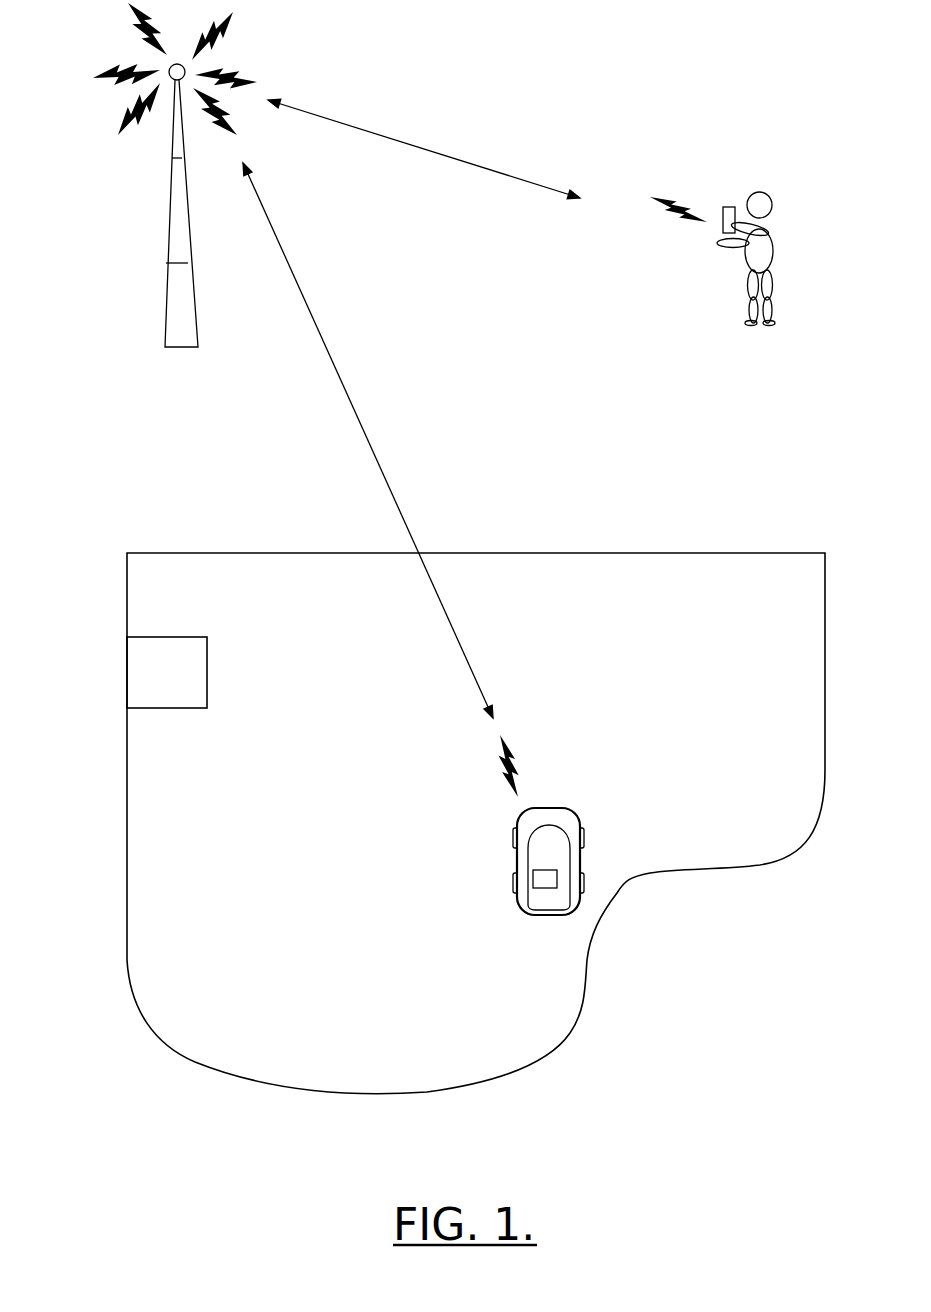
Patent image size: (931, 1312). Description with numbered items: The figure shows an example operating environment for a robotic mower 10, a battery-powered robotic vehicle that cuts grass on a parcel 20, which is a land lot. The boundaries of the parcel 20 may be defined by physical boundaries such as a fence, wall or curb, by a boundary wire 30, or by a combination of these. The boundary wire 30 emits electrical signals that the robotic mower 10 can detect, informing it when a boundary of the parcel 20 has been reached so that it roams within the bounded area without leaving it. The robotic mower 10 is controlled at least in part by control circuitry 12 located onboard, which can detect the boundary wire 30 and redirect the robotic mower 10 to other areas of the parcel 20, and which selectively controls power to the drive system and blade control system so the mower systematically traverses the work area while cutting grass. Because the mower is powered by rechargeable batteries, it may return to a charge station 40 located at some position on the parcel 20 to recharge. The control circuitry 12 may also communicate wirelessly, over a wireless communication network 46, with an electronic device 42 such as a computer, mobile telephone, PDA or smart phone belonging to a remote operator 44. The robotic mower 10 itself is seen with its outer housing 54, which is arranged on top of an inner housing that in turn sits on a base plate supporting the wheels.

The robotic mower 10 is at (583, 847).
The control circuitry 12 is at (552, 868).
The parcel 20 is at (352, 897).
The boundary wire 30 is at (582, 998).
The charge station 40 is at (153, 668).
The electronic device 42 is at (732, 198).
The remote operator 44 is at (800, 197).
The wireless communication network 46 is at (306, 300).
The outer housing 54 is at (545, 812).